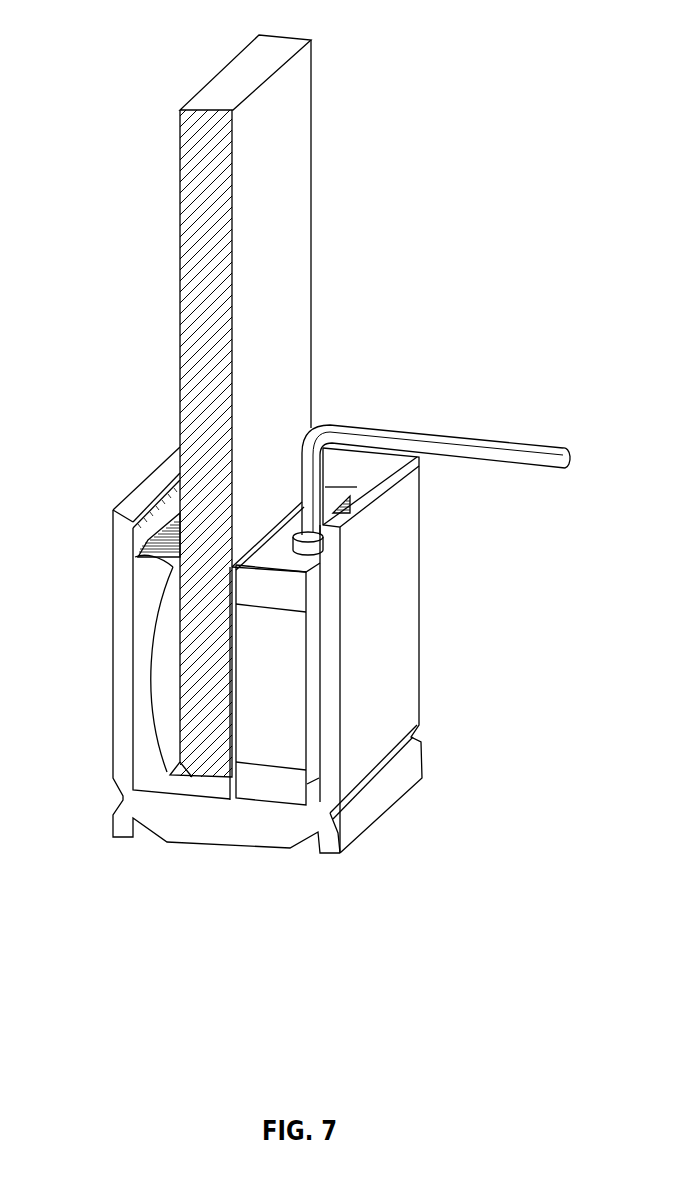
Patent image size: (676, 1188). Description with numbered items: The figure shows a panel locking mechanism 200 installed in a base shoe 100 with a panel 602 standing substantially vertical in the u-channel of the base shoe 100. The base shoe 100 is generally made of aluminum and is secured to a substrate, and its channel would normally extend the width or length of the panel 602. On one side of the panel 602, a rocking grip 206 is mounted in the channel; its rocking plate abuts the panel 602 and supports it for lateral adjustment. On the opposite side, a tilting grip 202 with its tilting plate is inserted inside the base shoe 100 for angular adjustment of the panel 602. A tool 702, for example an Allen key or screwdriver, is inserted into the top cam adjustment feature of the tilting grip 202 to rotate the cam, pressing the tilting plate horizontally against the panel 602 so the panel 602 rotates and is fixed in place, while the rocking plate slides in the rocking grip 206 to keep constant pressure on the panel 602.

The base shoe 100 is at (200, 293).
The panel 602 is at (213, 98).
The rocking grip 206 is at (135, 557).
The panel locking mechanism 200 is at (329, 363).
The tilting grip 202 is at (300, 688).
The tool 702 is at (550, 453).